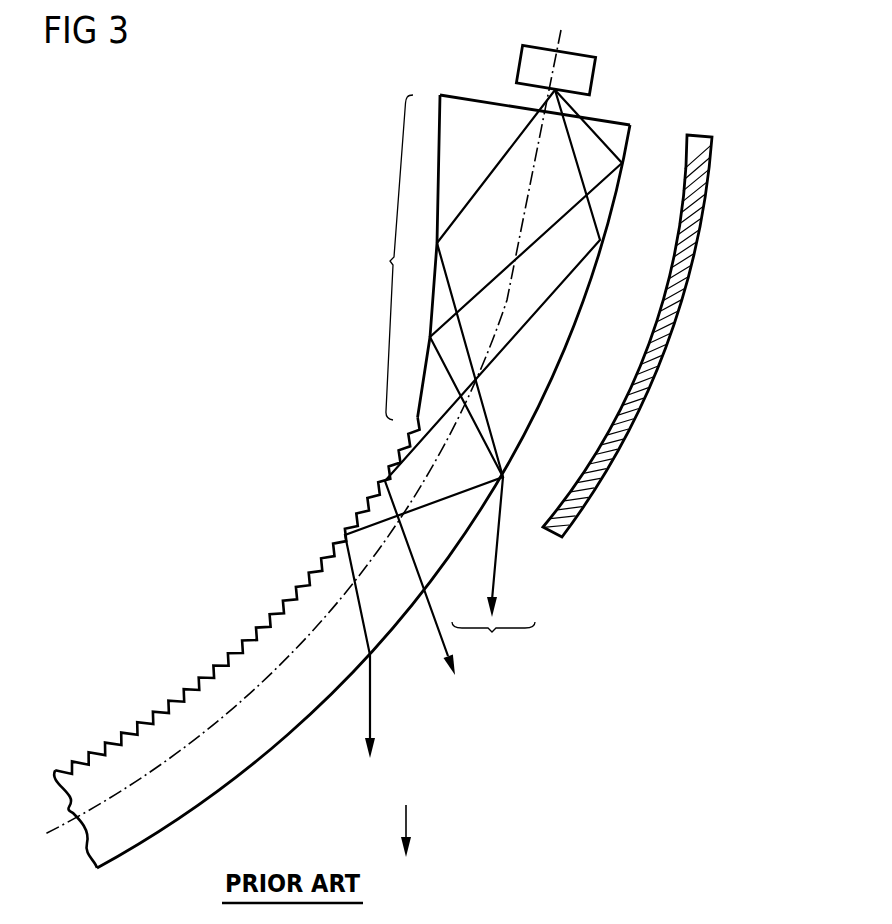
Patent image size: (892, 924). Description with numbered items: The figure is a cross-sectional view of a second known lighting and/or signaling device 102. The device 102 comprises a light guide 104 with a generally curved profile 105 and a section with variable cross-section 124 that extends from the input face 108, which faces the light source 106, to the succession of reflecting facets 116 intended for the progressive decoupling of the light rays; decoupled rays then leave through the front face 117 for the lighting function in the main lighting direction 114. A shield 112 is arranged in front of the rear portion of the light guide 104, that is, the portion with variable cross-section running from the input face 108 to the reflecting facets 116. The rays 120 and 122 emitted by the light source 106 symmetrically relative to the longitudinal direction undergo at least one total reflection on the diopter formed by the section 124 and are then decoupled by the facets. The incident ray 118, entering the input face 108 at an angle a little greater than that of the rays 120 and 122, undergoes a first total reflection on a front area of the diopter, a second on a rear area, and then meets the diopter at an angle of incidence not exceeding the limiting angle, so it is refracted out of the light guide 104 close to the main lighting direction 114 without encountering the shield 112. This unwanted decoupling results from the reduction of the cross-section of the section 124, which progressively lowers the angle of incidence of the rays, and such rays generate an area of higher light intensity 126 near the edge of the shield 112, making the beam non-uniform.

The device 102 is at (257, 241).
The light guide 104 is at (346, 475).
The curved profile 105 is at (561, 37).
The light source 106 is at (524, 58).
The input face 108 is at (472, 97).
The shield 112 is at (607, 440).
The main lighting direction 114 is at (406, 817).
The reflecting facets 116 is at (300, 582).
The front face 117 is at (293, 733).
The incident ray 118 is at (590, 113).
The ray 120 is at (496, 170).
The ray 122 is at (570, 138).
The section with variable cross-section 124 is at (382, 257).
The area of higher light intensity 126 is at (493, 642).